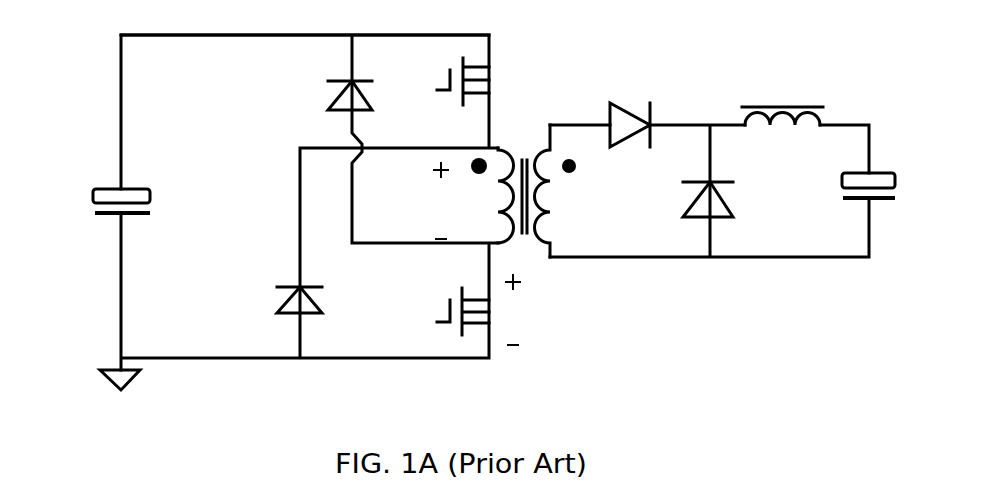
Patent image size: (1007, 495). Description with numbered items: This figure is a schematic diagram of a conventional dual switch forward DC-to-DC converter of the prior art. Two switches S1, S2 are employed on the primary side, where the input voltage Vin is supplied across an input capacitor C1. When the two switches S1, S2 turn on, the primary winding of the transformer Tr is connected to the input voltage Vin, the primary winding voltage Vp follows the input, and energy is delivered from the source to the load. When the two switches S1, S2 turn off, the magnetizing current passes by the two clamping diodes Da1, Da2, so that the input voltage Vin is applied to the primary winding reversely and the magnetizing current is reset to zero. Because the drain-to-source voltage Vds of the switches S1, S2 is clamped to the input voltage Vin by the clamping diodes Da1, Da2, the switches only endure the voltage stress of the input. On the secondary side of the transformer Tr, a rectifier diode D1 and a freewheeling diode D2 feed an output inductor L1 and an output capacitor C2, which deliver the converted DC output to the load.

The input voltage Vin is at (305, 21).
The input capacitor C1 is at (95, 206).
The clamping diode Da1 is at (313, 88).
The clamping diode Da2 is at (265, 297).
The first switch (MOSFET) S1 is at (443, 310).
The second switch (MOSFET) S2 is at (444, 81).
The transformer Tr is at (523, 181).
The primary winding voltage Vp is at (452, 201).
The drain-source voltage of S1 Vds is at (531, 310).
The output rectifier diode D1 is at (630, 105).
The freewheeling diode D2 is at (684, 199).
The output inductor L1 is at (782, 98).
The output capacitor C2 is at (883, 164).